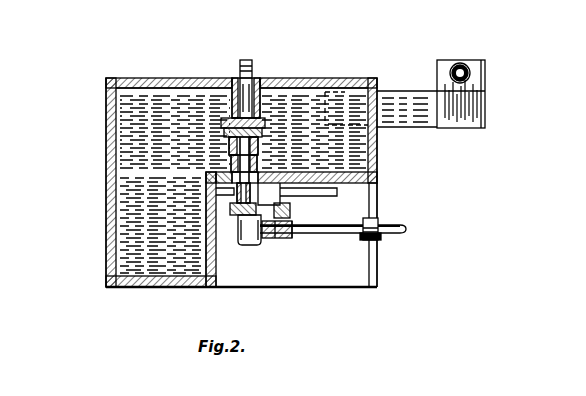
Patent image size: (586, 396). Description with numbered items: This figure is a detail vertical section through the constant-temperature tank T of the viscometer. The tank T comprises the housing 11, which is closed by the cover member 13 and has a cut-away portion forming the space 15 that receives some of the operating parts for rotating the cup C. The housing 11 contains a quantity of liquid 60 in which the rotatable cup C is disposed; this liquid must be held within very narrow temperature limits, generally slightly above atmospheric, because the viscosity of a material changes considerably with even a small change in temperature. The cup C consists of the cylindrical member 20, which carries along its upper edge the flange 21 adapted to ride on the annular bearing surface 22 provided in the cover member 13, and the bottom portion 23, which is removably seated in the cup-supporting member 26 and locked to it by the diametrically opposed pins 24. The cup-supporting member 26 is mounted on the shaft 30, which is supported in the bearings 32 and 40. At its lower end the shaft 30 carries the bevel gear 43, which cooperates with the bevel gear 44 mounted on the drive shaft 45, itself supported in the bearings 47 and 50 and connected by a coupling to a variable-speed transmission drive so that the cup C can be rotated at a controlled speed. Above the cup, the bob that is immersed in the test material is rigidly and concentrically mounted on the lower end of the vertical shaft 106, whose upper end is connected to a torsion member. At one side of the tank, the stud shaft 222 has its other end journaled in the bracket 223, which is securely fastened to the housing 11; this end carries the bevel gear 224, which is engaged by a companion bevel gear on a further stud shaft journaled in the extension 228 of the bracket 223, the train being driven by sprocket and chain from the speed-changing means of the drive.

The constant-temperature tank T is at (105, 216).
The housing 11 is at (106, 120).
The cover member 13 is at (134, 80).
The space 15 is at (355, 206).
The cylindrical member 20 is at (314, 99).
The flange 21 is at (233, 92).
The annular bearing surface 22 is at (272, 83).
The bottom portion 23 is at (224, 135).
The diametrically opposed pins 24 is at (221, 124).
The cup-supporting member 26 is at (260, 142).
The shaft 30 is at (260, 160).
The bearing 32 is at (230, 166).
The bearing 40 is at (206, 186).
The bevel gear 43 is at (207, 229).
The bevel gear 44 is at (262, 237).
The drive shaft 45 is at (399, 236).
The bearing 47 is at (292, 206).
The bearing 50 is at (380, 228).
The liquid 60 is at (333, 95).
The shaft 106 is at (251, 62).
The rotatable cup C is at (226, 100).
The indicator lamp 222 is at (465, 66).
The bracket 223 is at (424, 124).
The bevel gear 224 is at (470, 73).
The extension 228 is at (487, 108).